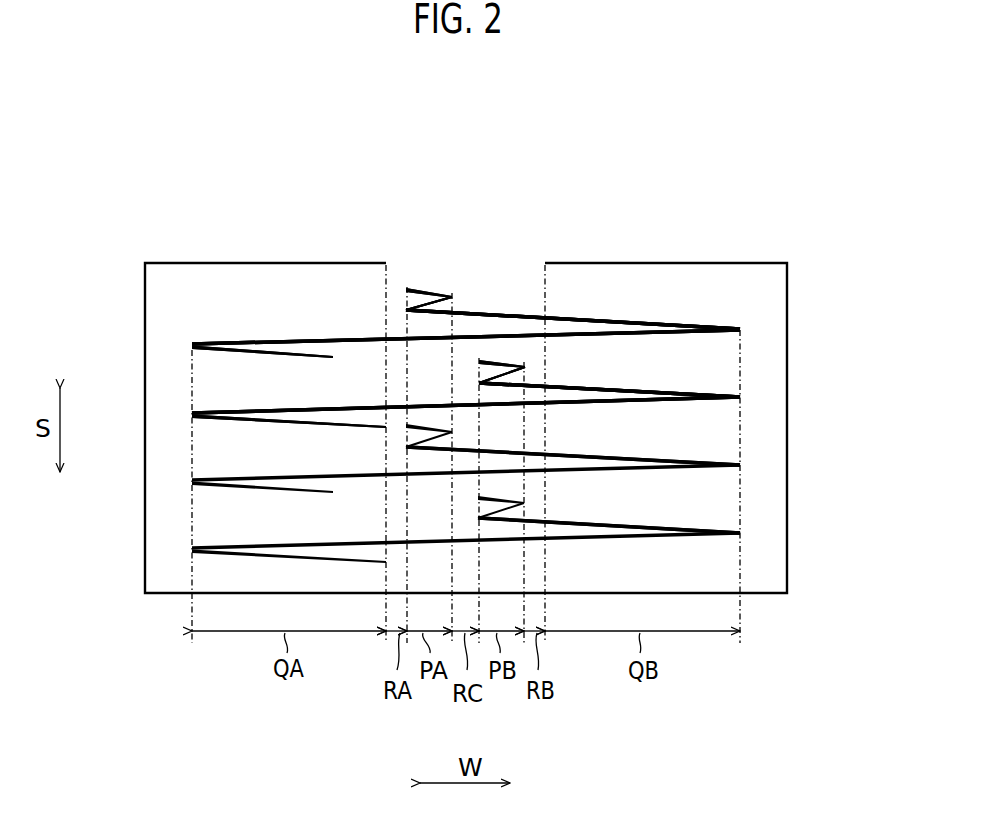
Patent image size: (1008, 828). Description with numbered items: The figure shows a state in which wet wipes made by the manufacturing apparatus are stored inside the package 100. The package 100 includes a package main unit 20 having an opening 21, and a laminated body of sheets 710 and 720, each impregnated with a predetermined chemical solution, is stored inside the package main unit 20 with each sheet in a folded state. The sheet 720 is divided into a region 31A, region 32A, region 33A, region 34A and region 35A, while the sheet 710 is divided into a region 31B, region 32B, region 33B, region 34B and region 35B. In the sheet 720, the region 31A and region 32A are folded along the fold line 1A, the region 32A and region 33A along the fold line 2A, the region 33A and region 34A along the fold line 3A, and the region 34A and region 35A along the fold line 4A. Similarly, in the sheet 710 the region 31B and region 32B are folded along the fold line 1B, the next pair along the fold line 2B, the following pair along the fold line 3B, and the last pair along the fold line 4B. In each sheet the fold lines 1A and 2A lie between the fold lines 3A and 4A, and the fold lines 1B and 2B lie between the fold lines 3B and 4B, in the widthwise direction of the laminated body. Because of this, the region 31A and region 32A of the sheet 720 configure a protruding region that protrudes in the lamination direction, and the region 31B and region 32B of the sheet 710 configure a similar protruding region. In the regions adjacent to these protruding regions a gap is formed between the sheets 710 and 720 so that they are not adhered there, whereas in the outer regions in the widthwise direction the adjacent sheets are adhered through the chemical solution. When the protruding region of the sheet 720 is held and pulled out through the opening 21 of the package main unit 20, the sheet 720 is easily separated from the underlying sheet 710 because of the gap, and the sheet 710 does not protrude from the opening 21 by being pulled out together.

The package 100 is at (213, 212).
The package main unit 20 is at (310, 263).
The opening 21 is at (520, 276).
The fold line 1A is at (452, 297).
The fold line 1B is at (527, 370).
The fold line 2A is at (407, 312).
The fold line 2B is at (481, 385).
The fold line 3A is at (740, 330).
The fold line 3B is at (740, 397).
The fold line 4A is at (192, 345).
The fold line 4B is at (192, 415).
The region 31A is at (428, 290).
The region 31B is at (518, 362).
The region 32A is at (415, 306).
The region 32B is at (479, 381).
The region 33A is at (560, 318).
The region 33B is at (607, 388).
The region 34A is at (330, 341).
The region 34B is at (358, 408).
The region 35A is at (277, 354).
The region 35B is at (313, 425).
The sheet 710 is at (712, 392).
The sheet 720 is at (712, 323).